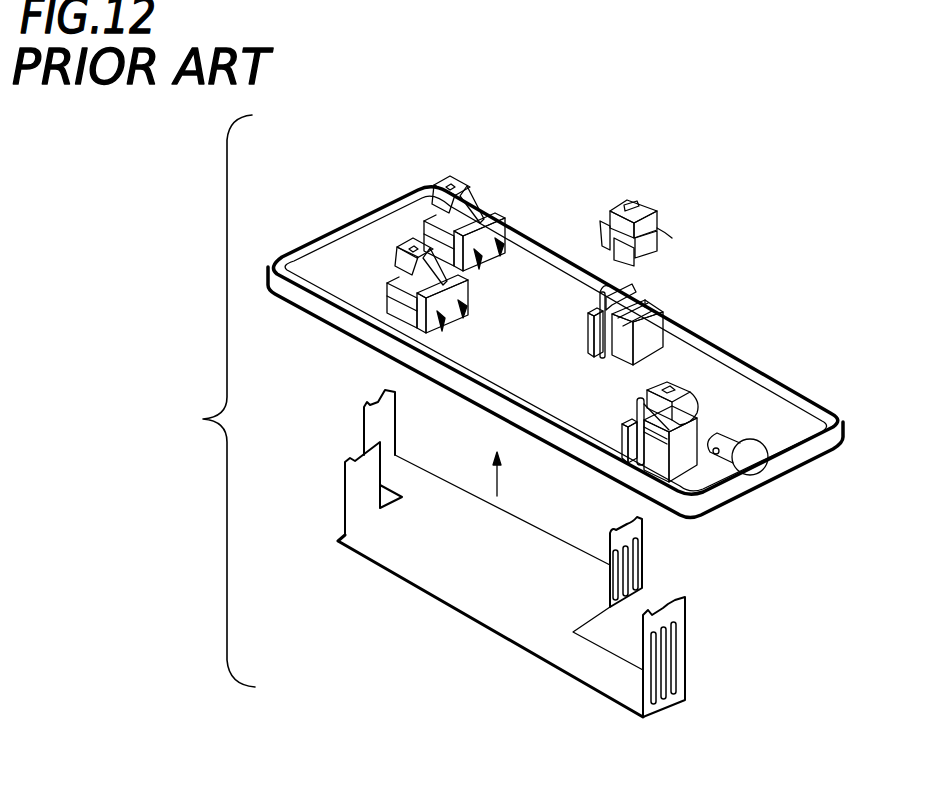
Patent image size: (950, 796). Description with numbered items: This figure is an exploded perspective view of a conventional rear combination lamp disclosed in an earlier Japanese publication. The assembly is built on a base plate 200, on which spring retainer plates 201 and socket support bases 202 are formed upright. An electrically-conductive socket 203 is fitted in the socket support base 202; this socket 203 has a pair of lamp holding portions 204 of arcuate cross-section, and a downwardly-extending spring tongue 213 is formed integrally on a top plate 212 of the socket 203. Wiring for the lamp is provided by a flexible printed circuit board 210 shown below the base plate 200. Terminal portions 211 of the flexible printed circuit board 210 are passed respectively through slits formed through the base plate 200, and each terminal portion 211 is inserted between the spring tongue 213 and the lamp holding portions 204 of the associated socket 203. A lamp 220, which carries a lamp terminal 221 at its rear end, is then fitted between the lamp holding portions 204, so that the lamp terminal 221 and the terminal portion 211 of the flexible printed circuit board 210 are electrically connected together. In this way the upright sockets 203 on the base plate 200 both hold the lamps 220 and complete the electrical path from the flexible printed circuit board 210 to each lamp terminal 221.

The base plate 200 is at (720, 368).
The spring retainer plate 201 is at (470, 293).
The socket support base 202 is at (405, 240).
The socket 203 is at (390, 248).
The lamp holding portion 204 is at (657, 227).
The flexible printed circuit board 210 is at (440, 603).
The terminal portion 211 is at (478, 193).
The top plate 212 is at (405, 240).
The spring tongue 213 is at (417, 287).
The lamp 220 is at (773, 453).
The lamp terminal 221 is at (722, 433).